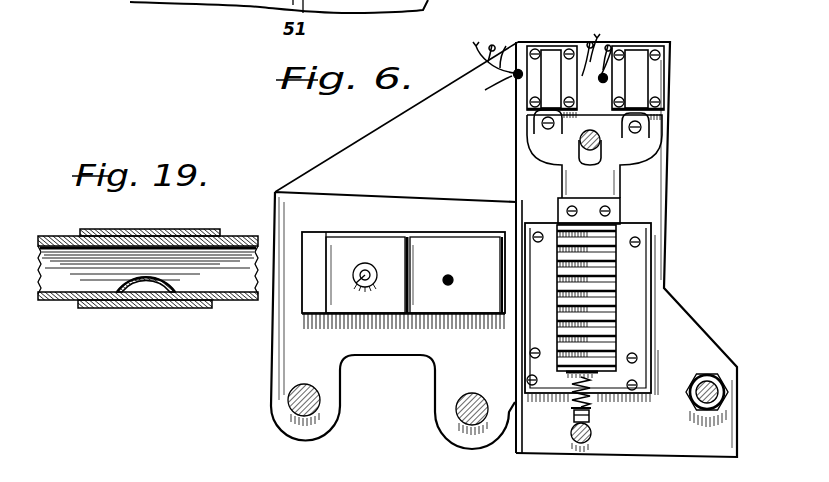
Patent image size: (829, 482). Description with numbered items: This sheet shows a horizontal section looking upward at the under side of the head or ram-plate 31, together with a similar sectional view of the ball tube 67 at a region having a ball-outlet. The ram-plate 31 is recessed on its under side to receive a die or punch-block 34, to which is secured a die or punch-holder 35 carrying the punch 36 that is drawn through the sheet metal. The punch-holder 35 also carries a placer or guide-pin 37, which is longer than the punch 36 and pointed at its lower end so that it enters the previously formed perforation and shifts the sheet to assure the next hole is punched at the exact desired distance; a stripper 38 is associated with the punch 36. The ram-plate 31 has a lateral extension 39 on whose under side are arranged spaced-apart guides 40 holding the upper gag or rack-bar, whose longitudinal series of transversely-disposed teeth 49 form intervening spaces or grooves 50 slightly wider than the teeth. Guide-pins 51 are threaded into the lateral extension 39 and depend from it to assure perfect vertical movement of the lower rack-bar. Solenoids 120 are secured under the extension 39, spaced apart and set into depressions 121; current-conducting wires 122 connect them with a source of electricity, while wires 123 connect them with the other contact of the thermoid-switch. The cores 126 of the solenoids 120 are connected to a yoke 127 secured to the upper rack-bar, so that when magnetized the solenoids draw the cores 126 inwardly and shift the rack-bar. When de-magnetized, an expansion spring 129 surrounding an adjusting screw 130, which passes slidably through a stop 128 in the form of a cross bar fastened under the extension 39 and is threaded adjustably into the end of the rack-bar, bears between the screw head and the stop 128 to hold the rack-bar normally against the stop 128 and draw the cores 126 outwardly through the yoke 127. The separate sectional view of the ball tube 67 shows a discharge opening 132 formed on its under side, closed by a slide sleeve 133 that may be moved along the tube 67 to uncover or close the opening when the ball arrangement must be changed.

In FIG. 6, the head or ram-plate 31 is at (413, 131).
In FIG. 6, the die or punch-block 34 is at (372, 207).
In FIG. 6, the die or punch-holder 35 is at (386, 244).
In FIG. 6, the punch 36 is at (360, 270).
In FIG. 6, the placer or guide-pin 37 is at (449, 276).
In FIG. 6, the stripper 38 is at (357, 284).
In FIG. 6, the lateral extension 39 is at (640, 200).
In FIG. 6, the guides 40 is at (530, 340).
In FIG. 6, the teeth 49 is at (606, 288).
In FIG. 6, the spaces or grooves 50 is at (604, 341).
In FIG. 6, the guide-pins 51 is at (579, 147).
In FIG. 6, the solenoids 120 is at (531, 70).
In FIG. 6, the depressions 121 is at (650, 120).
In FIG. 6, the current-conducting wires 122 is at (480, 63).
In FIG. 6, the wires 123 is at (496, 84).
In FIG. 6, the cores 126 is at (536, 116).
In FIG. 6, the yoke 127 is at (612, 170).
In FIG. 6, the stop 128 is at (640, 366).
In FIG. 6, the expansion spring 129 is at (596, 404).
In FIG. 6, the adjusting screw 130 is at (573, 418).
In FIG. 19, the ball tube 67 is at (243, 302).
In FIG. 19, the discharge opening 132 is at (150, 297).
In FIG. 19, the slide sleeves 133 is at (198, 308).